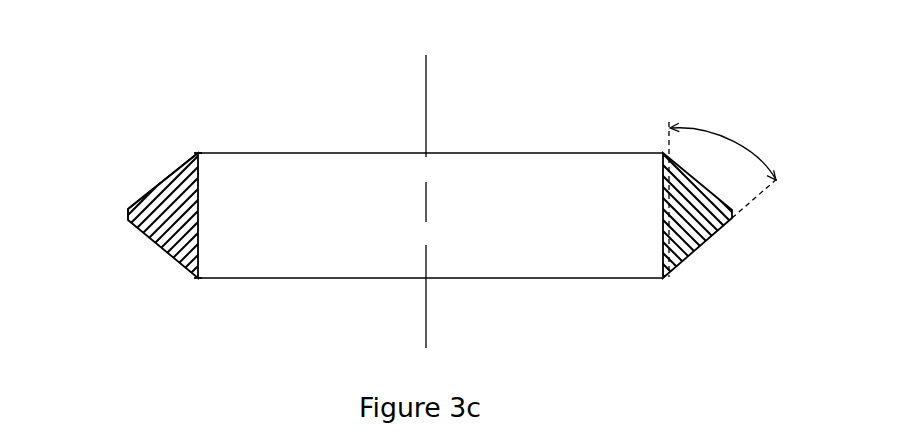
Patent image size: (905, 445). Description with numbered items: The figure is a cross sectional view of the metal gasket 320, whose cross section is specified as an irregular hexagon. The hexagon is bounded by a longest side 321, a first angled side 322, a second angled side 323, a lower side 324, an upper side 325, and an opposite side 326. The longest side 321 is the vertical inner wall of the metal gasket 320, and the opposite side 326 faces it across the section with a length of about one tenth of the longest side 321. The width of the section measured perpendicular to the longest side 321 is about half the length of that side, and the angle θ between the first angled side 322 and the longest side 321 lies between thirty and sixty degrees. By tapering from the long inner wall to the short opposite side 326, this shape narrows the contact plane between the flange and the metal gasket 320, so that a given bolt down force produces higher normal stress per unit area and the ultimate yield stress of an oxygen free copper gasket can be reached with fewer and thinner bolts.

The metal gasket 320 is at (610, 57).
The longest side 321 is at (203, 232).
The first angled side 322 is at (155, 248).
The second angled side 323 is at (157, 183).
The lower side 324 is at (197, 280).
The upper side 325 is at (193, 150).
The opposite side 326 is at (128, 217).